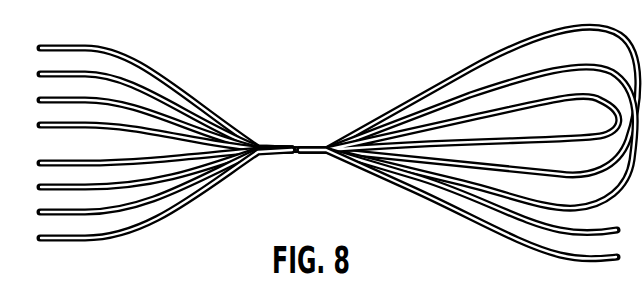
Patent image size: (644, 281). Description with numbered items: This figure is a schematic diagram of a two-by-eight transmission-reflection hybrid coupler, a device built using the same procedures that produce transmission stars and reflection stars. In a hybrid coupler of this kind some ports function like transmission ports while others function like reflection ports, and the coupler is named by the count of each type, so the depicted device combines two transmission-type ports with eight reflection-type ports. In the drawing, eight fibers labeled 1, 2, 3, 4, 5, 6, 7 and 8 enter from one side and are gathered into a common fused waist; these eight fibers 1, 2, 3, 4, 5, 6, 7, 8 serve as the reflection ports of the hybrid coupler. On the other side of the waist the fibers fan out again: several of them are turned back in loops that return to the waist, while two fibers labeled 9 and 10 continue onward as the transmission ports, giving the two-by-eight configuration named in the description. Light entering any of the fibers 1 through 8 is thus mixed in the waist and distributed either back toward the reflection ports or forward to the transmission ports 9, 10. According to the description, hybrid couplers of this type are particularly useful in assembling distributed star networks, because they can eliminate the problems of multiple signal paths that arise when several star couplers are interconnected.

The optical fiber 1 is at (158, 94).
The optical fiber 2 is at (158, 107).
The optical fiber 3 is at (158, 119).
The optical fiber 4 is at (158, 132).
The optical fiber 5 is at (158, 161).
The optical fiber 6 is at (158, 173).
The optical fiber 7 is at (158, 186).
The optical fiber 8 is at (158, 199).
The output fiber 9 is at (466, 196).
The output fiber 10 is at (472, 209).